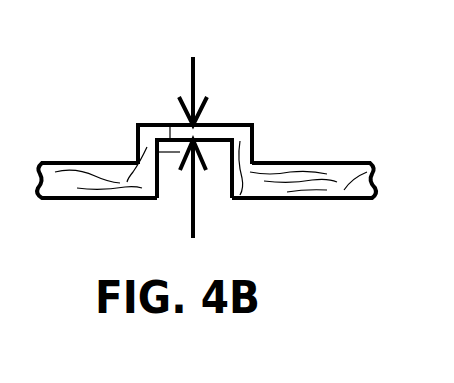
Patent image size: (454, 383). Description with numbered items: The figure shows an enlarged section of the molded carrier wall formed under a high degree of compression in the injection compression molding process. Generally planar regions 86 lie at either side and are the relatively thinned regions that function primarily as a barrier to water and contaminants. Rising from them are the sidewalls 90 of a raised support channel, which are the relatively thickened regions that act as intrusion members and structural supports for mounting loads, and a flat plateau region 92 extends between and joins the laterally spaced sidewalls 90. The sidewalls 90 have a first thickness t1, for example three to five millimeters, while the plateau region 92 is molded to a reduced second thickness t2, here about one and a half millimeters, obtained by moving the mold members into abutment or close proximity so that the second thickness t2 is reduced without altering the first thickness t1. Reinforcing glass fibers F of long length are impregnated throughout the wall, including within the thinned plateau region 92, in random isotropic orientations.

The sidewall 90 is at (138, 143).
The generally planar region 86 is at (338, 163).
The plateau region 92 is at (146, 125).
The first thickness t1 is at (137, 149).
The second thickness t2 is at (170, 170).
The reinforcing fibers F is at (260, 155).